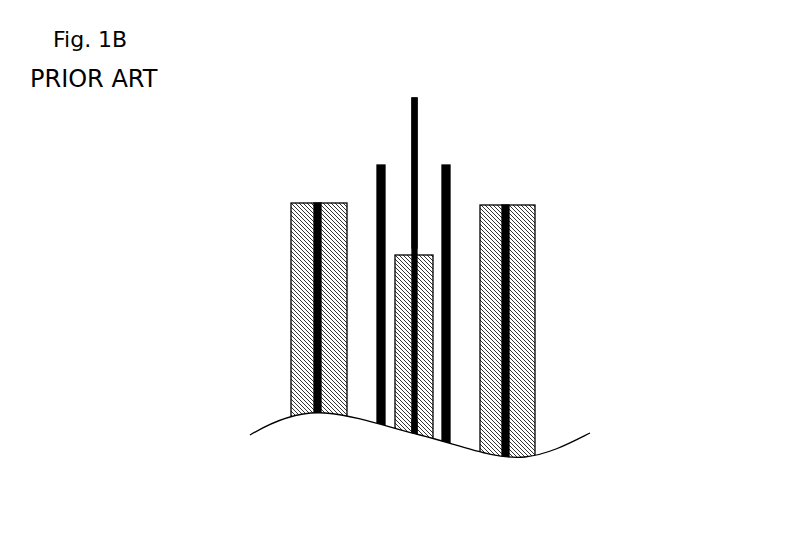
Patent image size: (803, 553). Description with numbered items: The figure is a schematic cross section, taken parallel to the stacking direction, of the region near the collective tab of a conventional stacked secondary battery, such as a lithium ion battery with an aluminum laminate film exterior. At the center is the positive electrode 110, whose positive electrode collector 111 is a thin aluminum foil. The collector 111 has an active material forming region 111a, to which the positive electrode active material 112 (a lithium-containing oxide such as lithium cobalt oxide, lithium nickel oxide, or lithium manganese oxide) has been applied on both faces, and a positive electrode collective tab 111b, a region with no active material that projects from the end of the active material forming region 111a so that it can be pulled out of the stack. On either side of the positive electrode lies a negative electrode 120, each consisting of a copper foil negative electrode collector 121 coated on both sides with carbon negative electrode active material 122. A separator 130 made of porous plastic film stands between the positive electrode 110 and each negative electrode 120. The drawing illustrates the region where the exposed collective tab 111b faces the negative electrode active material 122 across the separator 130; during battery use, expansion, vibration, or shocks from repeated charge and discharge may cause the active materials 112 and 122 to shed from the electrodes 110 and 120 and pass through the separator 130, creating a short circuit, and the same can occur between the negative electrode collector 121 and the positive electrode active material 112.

The positive electrode 110 is at (450, 277).
The positive electrode collector 111 is at (414, 96).
The active material forming region 111a is at (412, 433).
The positive electrode collective tab 111b is at (407, 247).
The positive electrode active material 112 is at (426, 255).
The negative electrode 120 is at (477, 334).
The negative electrode collector 121 is at (611, 298).
The negative electrode active material 122 is at (537, 313).
The separator 130 is at (452, 174).